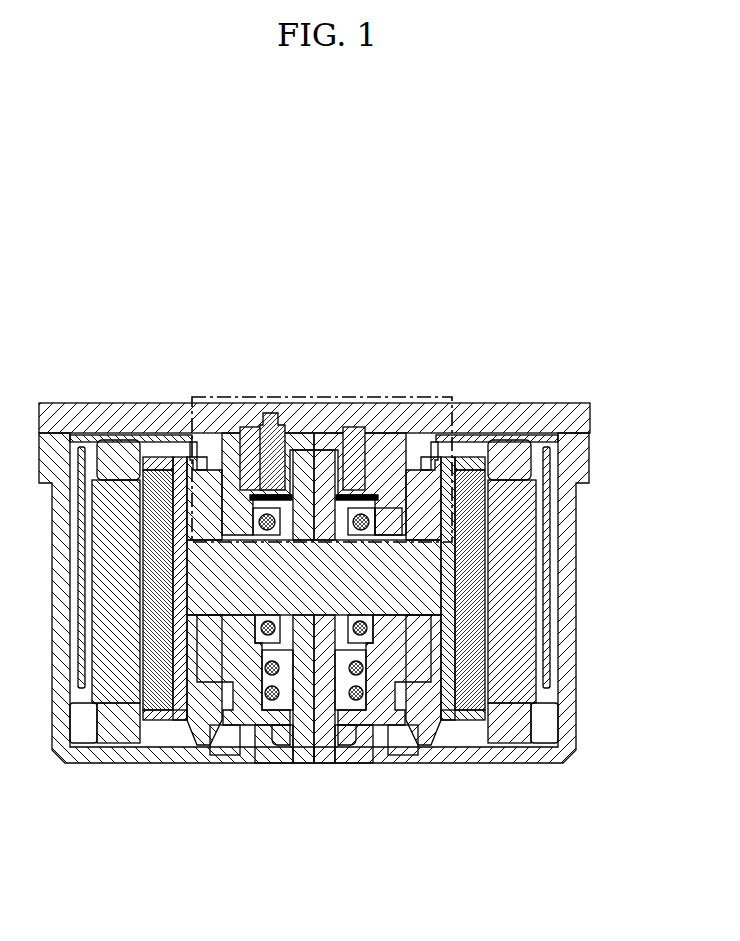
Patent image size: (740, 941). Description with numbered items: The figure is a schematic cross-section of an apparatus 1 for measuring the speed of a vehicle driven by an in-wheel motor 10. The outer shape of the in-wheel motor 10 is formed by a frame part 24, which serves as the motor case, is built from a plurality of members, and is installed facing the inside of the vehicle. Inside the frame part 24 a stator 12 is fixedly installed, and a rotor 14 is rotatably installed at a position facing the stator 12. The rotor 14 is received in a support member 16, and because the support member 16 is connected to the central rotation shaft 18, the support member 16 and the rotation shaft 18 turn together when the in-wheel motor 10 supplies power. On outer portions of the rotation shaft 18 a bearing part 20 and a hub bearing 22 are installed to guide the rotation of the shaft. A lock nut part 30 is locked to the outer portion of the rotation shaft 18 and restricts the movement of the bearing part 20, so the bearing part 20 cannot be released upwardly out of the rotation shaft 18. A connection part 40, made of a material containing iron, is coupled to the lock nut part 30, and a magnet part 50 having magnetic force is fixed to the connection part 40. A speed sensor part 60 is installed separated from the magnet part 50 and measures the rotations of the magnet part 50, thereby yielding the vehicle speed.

The apparatus for measuring a speed of a vehicle 1 is at (551, 823).
The in-wheel motor 10 is at (566, 766).
The stator 12 is at (118, 667).
The rotor 14 is at (162, 667).
The support member 16 is at (175, 717).
The rotation shaft 18 is at (310, 700).
The bearing part 20 is at (395, 460).
The hub bearing 22 is at (378, 663).
The frame part 24 is at (583, 500).
The lock nut part 30 is at (233, 480).
The connection part 40 is at (380, 518).
The magnet part 50 is at (348, 470).
The speed sensor part 60 is at (270, 470).